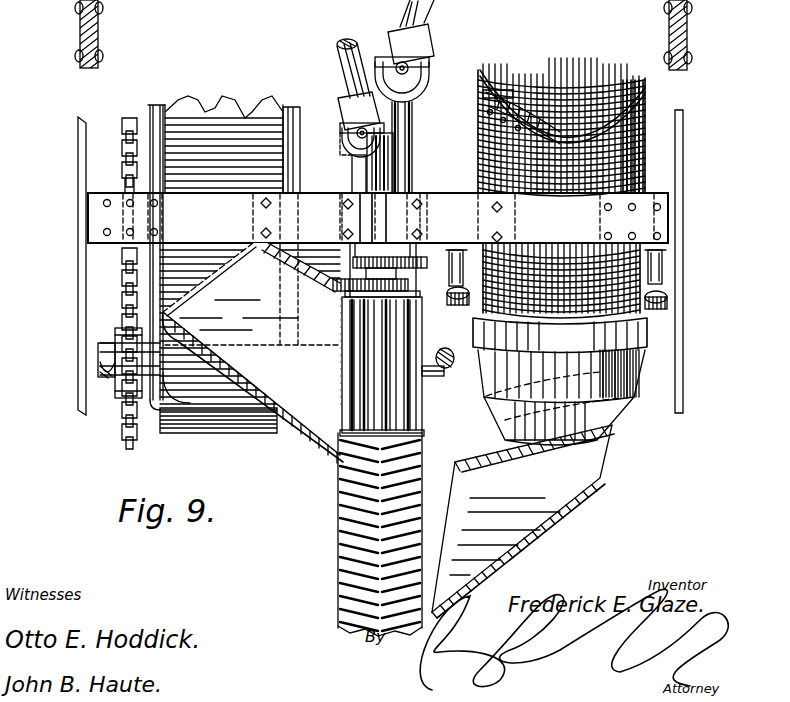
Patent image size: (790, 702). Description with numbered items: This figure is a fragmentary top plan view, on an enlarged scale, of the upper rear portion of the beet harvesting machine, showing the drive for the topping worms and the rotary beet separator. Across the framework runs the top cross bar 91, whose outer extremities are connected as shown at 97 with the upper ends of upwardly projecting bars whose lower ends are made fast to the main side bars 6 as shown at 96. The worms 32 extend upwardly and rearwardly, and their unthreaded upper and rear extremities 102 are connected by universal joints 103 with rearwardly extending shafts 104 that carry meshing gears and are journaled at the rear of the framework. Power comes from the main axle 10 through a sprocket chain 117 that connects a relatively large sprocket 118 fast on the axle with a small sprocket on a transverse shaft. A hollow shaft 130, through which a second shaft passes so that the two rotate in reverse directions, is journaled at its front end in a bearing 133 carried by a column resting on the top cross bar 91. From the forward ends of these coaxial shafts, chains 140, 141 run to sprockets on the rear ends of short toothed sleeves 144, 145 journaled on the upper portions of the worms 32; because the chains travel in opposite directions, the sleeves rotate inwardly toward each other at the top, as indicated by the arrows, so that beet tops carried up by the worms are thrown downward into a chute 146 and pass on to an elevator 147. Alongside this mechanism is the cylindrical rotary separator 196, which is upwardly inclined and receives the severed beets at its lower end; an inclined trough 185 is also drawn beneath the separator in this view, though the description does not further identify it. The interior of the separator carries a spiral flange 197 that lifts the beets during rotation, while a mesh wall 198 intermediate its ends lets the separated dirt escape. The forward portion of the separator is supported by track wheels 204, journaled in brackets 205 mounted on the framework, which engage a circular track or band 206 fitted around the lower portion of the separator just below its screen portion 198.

The main side bars 6 is at (62, 279).
The main axle 10 is at (110, 345).
The worms 32 is at (332, 540).
The top cross bar 91 is at (378, 218).
The fastening of bars to main side bars 96 is at (98, 36).
The connection of bars to cross bar 97 is at (104, 231).
The upper and rear extremities of worms 102 is at (355, 182).
The universal joints 103 is at (430, 50).
The rearwardly extending shafts 104 is at (338, 45).
The sprocket chain 117 is at (120, 165).
The sprocket 118 is at (115, 394).
The hollow shaft 130 is at (406, 176).
The bearing 133 is at (372, 223).
The chain 140 is at (412, 271).
The chain 141 is at (337, 288).
The toothed sleeve 144 is at (422, 408).
The toothed sleeve 145 is at (322, 450).
The chute 146 is at (251, 349).
The elevator 147 is at (200, 130).
The chute 185 is at (520, 524).
The cylindrical rotary separator 196 is at (546, 305).
The spiral flange 197 is at (523, 80).
The mesh wall 198 is at (640, 78).
The track wheels 204 is at (668, 297).
The brackets 205 is at (466, 222).
The circular track 206 is at (560, 336).